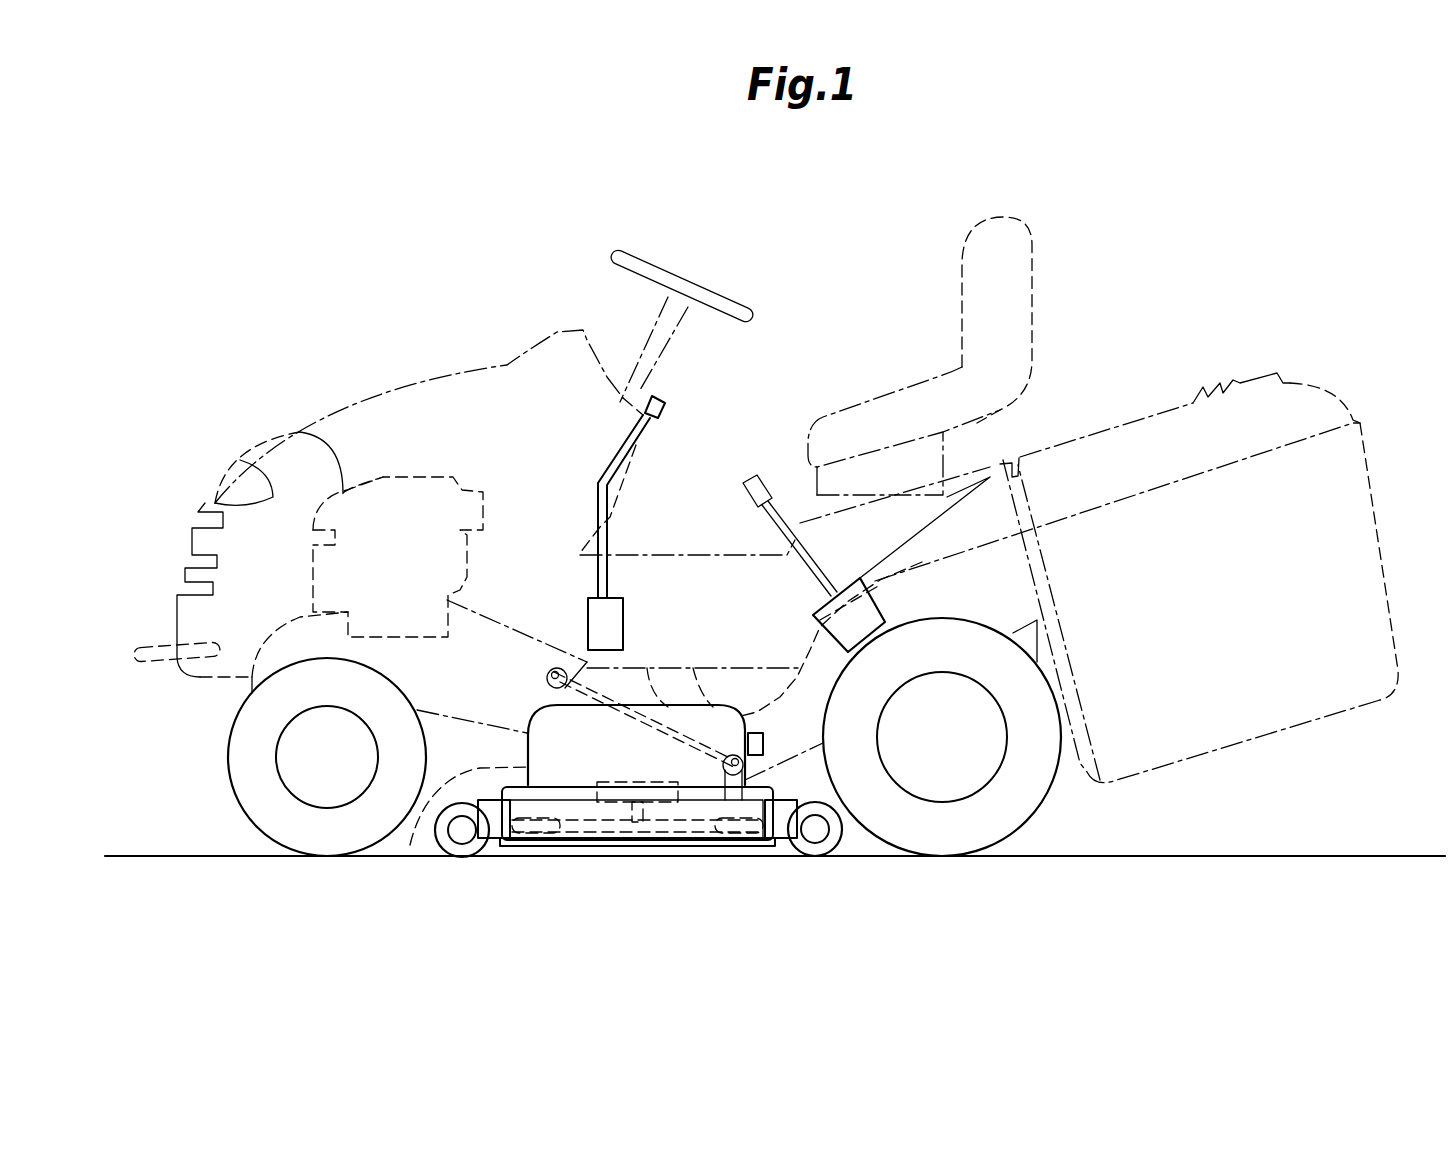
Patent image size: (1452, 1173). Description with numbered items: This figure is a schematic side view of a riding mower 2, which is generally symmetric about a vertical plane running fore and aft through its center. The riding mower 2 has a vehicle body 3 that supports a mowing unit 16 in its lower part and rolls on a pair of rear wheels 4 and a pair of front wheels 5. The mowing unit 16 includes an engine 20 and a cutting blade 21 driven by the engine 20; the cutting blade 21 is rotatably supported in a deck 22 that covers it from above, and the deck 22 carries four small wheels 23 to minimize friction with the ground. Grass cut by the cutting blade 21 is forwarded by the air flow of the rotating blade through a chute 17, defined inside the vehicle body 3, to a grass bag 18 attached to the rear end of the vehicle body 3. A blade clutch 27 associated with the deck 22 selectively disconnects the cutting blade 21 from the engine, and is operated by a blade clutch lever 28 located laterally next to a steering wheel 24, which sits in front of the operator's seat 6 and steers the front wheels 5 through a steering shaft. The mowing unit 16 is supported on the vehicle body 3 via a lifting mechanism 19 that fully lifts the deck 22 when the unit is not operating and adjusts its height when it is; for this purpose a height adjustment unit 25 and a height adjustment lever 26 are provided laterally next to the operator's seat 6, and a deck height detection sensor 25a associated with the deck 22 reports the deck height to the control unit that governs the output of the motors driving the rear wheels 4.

The riding mower 2 is at (1042, 152).
The vehicle body 3 is at (404, 390).
The rear wheels 4 is at (1010, 828).
The front wheels 5 is at (247, 813).
The operator's seat 6 is at (1033, 280).
The mowing unit 16 is at (578, 848).
The chute 17 is at (778, 848).
The grass bag 18 is at (1370, 480).
The lifting mechanism 19 is at (698, 760).
The engine 20 is at (283, 418).
The cutting blade 21 is at (633, 820).
The deck 22 is at (483, 768).
The small wheels 23 is at (465, 850).
The steering wheel 24 is at (740, 302).
The height adjustment unit 25 is at (823, 617).
The deck height detection sensor 25a is at (760, 733).
The height adjustment lever 26 is at (783, 512).
The blade clutch 27 is at (613, 803).
The blade clutch lever 28 is at (633, 450).